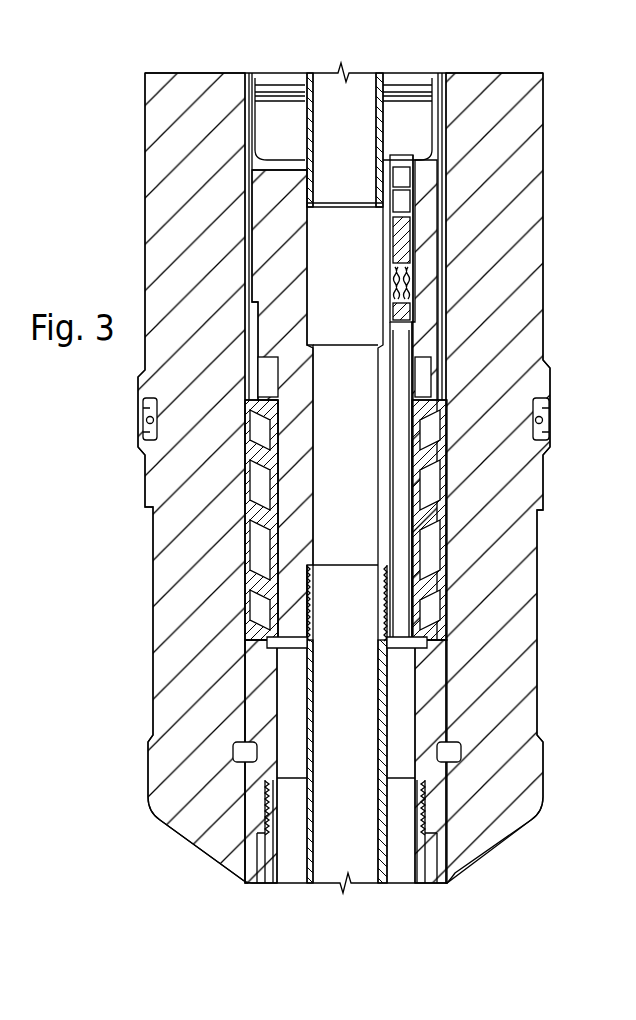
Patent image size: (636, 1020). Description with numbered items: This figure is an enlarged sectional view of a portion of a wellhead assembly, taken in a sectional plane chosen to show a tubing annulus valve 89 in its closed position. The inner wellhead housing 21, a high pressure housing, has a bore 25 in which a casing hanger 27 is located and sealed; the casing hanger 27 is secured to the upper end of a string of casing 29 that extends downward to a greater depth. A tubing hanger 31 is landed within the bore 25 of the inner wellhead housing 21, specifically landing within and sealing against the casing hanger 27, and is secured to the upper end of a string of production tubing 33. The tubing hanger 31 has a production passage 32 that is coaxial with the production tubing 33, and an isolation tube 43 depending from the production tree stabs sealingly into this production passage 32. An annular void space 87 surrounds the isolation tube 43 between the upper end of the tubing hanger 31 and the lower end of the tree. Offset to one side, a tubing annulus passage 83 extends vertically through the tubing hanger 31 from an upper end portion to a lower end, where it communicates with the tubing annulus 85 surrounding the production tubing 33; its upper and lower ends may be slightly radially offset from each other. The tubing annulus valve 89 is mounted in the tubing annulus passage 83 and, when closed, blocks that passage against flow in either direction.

The inner wellhead housing 21 is at (527, 289).
The bore 25 is at (440, 437).
The casing hanger 27 is at (437, 662).
The casing 29 is at (422, 862).
The tubing hanger 31 is at (272, 215).
The production passage 32 is at (359, 396).
The production tubing 33 is at (305, 690).
The isolation tube 43 is at (307, 178).
The tubing annulus passage 83 is at (403, 345).
The tubing annulus 85 is at (400, 823).
The annular void space 87 is at (296, 140).
The tubing annulus valve 89 is at (418, 248).